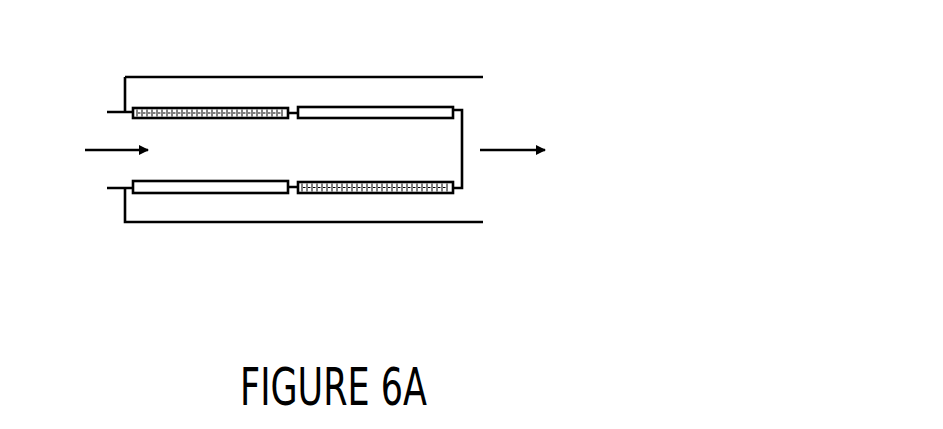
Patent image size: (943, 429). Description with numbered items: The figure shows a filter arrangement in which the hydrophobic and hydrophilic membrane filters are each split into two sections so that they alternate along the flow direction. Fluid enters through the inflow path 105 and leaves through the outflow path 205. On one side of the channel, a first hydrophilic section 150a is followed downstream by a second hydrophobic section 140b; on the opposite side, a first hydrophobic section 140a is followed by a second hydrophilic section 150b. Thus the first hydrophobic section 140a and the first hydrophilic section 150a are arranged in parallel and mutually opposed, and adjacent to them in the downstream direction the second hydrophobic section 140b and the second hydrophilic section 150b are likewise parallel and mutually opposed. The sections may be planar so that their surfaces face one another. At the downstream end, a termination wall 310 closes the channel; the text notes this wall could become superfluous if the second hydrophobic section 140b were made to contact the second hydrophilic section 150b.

The inflow path 105 is at (85, 150).
The first section of the hydrophilic membrane filter 150a is at (228, 108).
The second section of the hydrophobic membrane filter 140b is at (405, 105).
The termination wall 310 is at (467, 140).
The first section of the hydrophobic membrane filter 140a is at (200, 195).
The second section of the hydrophilic membrane filter 150b is at (375, 195).
The outflow path 205 is at (535, 155).